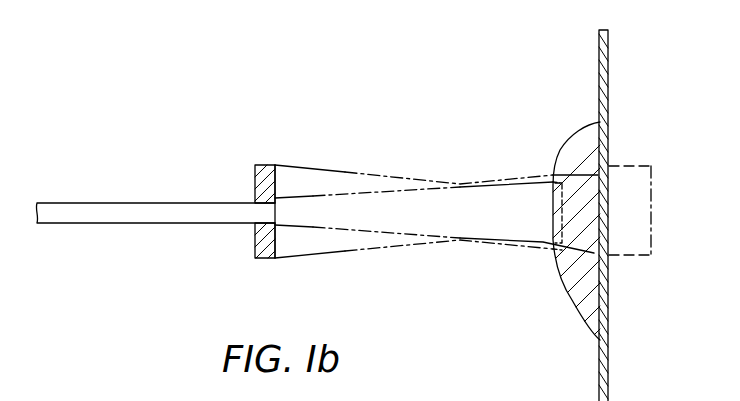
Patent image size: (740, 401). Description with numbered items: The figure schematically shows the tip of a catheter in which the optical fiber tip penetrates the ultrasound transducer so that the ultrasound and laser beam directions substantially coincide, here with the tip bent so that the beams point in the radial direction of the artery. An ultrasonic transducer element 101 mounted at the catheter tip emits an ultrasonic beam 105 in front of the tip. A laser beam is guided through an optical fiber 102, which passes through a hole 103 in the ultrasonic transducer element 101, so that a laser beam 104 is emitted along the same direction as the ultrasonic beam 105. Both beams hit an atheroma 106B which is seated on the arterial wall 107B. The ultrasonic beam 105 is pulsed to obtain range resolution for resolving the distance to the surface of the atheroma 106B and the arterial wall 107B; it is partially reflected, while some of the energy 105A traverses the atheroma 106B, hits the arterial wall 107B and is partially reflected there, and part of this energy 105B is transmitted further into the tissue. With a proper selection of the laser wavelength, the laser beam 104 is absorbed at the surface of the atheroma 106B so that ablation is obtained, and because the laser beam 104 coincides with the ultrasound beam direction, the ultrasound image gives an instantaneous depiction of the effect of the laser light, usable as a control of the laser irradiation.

The ultrasonic transducer element 101 is at (256, 169).
The optical fiber 102 is at (184, 203).
The hole 103 is at (268, 216).
The laser beam 104 is at (490, 231).
The ultrasonic beam 105 is at (340, 152).
The energy traversing the atheroma 105A is at (572, 172).
The transmitted energy 105B is at (657, 254).
The atheroma 106B is at (576, 321).
The arterial wall 107B is at (608, 58).